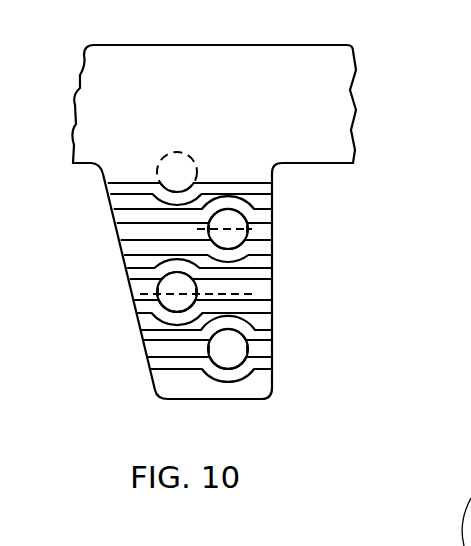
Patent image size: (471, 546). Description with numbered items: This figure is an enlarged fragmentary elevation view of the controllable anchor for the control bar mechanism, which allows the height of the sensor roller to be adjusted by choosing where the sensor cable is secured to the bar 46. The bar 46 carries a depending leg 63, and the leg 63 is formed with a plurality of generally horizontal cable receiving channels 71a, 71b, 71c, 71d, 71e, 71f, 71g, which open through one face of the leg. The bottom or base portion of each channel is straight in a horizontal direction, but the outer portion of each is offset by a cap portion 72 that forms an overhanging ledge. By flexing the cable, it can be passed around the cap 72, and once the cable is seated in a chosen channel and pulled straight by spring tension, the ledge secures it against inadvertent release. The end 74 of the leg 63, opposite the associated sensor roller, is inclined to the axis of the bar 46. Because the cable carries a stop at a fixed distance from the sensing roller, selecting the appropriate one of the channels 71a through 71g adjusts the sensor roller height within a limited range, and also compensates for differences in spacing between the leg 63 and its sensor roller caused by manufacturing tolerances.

The bar 46 is at (200, 45).
The depending leg 63 is at (278, 258).
The cable receiving channel 71a is at (263, 188).
The cable receiving channel 71b is at (263, 218).
The cable receiving channel 71c is at (263, 248).
The cable receiving channel 71d is at (265, 275).
The cable receiving channel 71e is at (265, 305).
The cable receiving channel 71f is at (265, 337).
The cable receiving channel 71g is at (267, 365).
The cap portion 72 is at (226, 216).
The end of the leg 74 is at (122, 261).